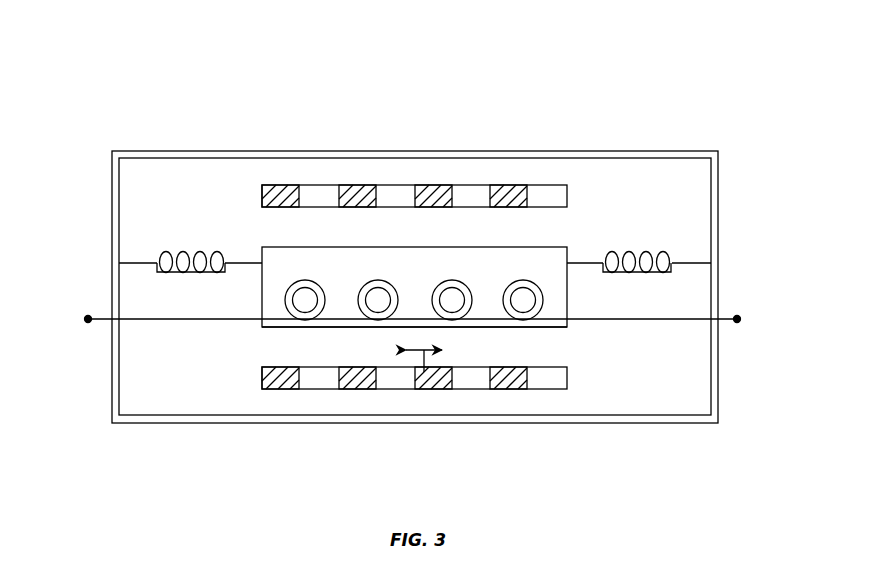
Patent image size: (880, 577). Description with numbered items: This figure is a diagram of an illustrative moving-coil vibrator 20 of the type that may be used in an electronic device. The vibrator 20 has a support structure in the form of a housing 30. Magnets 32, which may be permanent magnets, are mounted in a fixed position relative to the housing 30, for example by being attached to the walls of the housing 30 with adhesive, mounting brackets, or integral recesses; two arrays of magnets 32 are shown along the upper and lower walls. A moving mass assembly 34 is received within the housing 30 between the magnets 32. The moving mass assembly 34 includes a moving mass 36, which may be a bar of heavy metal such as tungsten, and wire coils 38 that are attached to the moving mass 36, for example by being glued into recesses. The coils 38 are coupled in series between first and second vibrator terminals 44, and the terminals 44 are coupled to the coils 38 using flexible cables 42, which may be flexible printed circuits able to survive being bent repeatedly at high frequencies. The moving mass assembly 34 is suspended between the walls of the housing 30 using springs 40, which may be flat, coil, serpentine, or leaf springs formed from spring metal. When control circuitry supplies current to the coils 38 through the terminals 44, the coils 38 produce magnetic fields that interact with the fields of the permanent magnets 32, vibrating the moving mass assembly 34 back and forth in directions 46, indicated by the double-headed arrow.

The vibrator 20 is at (648, 110).
The housing 30 is at (719, 177).
The magnets 32 is at (258, 179).
The moving mass assembly 34 is at (571, 243).
The moving mass 36 is at (557, 330).
The wire coils 38 is at (450, 280).
The springs 40 is at (161, 244).
The flexible cables 42 is at (172, 321).
The vibrator terminals 44 is at (84, 318).
The directions 46 is at (424, 373).